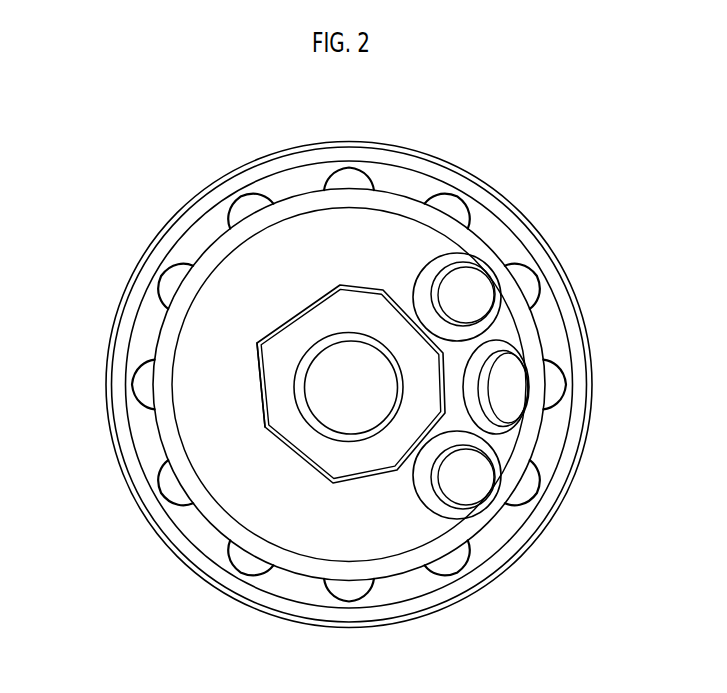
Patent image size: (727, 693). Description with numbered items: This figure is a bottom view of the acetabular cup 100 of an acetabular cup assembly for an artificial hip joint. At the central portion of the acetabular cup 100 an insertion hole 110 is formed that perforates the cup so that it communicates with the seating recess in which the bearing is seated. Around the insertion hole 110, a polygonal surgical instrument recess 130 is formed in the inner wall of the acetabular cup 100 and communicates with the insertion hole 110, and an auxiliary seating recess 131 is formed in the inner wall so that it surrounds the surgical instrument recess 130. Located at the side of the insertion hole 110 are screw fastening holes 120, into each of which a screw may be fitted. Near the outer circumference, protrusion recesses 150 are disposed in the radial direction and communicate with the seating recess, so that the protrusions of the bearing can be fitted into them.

The acetabular cup 100 is at (173, 197).
The insertion hole 110 is at (342, 411).
The screw fastening holes 120 is at (473, 288).
The surgical instrument recess 130 is at (421, 378).
The auxiliary seating recess 131 is at (253, 381).
The protrusion recesses 150 is at (174, 490).